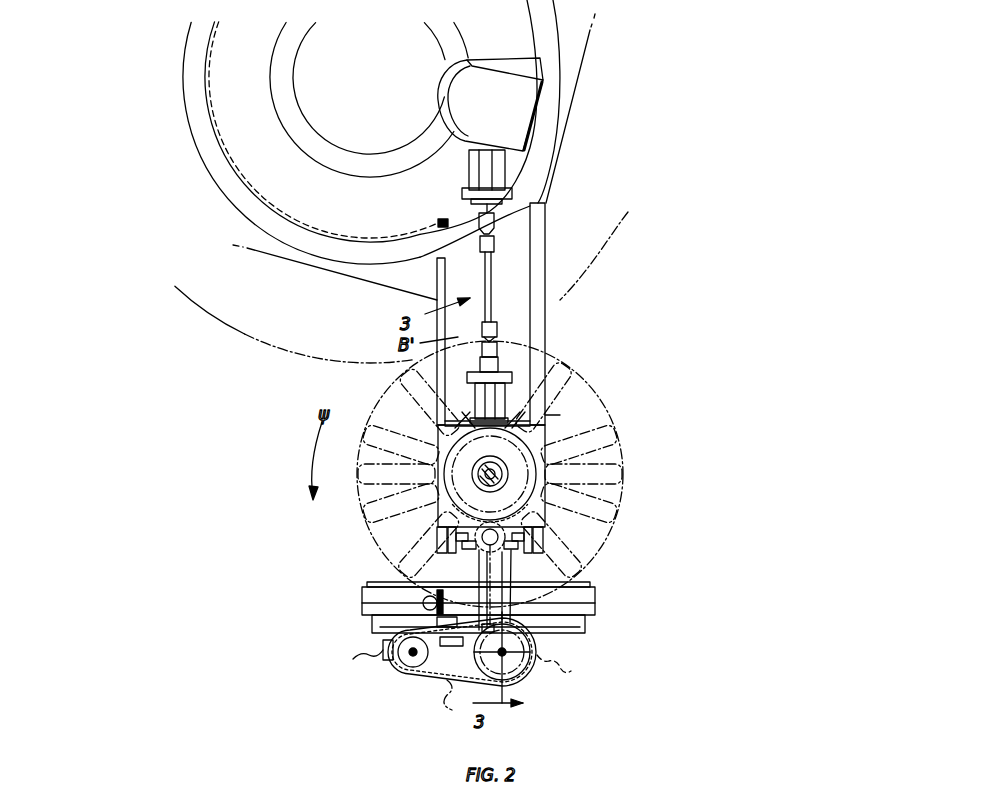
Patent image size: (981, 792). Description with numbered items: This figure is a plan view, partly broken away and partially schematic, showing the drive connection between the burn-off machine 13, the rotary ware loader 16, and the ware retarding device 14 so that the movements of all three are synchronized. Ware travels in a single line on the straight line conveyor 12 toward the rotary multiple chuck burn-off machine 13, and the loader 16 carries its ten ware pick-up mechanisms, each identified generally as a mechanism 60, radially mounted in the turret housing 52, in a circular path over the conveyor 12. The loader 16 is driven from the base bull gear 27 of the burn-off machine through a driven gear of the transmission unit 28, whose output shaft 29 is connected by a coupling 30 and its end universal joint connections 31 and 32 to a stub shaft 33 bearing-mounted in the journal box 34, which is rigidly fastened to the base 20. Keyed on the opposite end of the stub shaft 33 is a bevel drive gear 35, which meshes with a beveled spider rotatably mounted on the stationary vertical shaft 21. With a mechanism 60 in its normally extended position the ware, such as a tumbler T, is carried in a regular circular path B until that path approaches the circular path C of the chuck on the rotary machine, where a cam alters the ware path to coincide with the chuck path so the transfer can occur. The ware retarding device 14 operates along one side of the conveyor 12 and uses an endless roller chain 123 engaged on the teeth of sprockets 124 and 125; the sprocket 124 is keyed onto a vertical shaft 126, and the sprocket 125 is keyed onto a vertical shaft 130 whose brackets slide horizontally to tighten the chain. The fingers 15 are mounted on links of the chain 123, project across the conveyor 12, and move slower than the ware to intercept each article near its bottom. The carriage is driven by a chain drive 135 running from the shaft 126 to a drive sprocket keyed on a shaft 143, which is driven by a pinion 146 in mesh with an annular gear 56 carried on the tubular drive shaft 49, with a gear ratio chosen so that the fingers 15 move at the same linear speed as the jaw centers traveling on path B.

The straight line conveyor 12 is at (370, 607).
The rotary multiple chuck burn-off machine 13 is at (583, 103).
The ware retarding device 14 is at (417, 683).
The fingers 15 is at (358, 661).
The rotary ware loader 16 is at (350, 527).
The base 20 is at (445, 516).
The vertical shaft 21 is at (507, 467).
The base bull gear 27 is at (540, 71).
The transmission unit 28 is at (513, 111).
The output shaft 29 is at (497, 223).
The coupling 30 is at (492, 284).
The universal joint connection 31 is at (493, 241).
The universal joint connection 32 is at (498, 327).
The stub shaft 33 is at (500, 361).
The journal box 34 is at (503, 393).
The bevel drive gear 35 is at (560, 420).
The tubular drive shaft 49 is at (506, 476).
The housing 52 is at (417, 478).
The annular gear 56 is at (537, 492).
The ware pick-up mechanism 60 is at (640, 512).
The roller chain 123 is at (535, 645).
The sprocket 124 is at (522, 670).
The sprocket 125 is at (444, 681).
The vertical shaft 126 is at (572, 664).
The vertical shaft 130 is at (410, 661).
The chain drive 135 is at (515, 578).
The shaft 143 is at (452, 541).
The pinion 146 is at (540, 538).
The tumbler T is at (372, 601).
The circular path B is at (665, 462).
The circular path of the chuck C is at (558, 298).